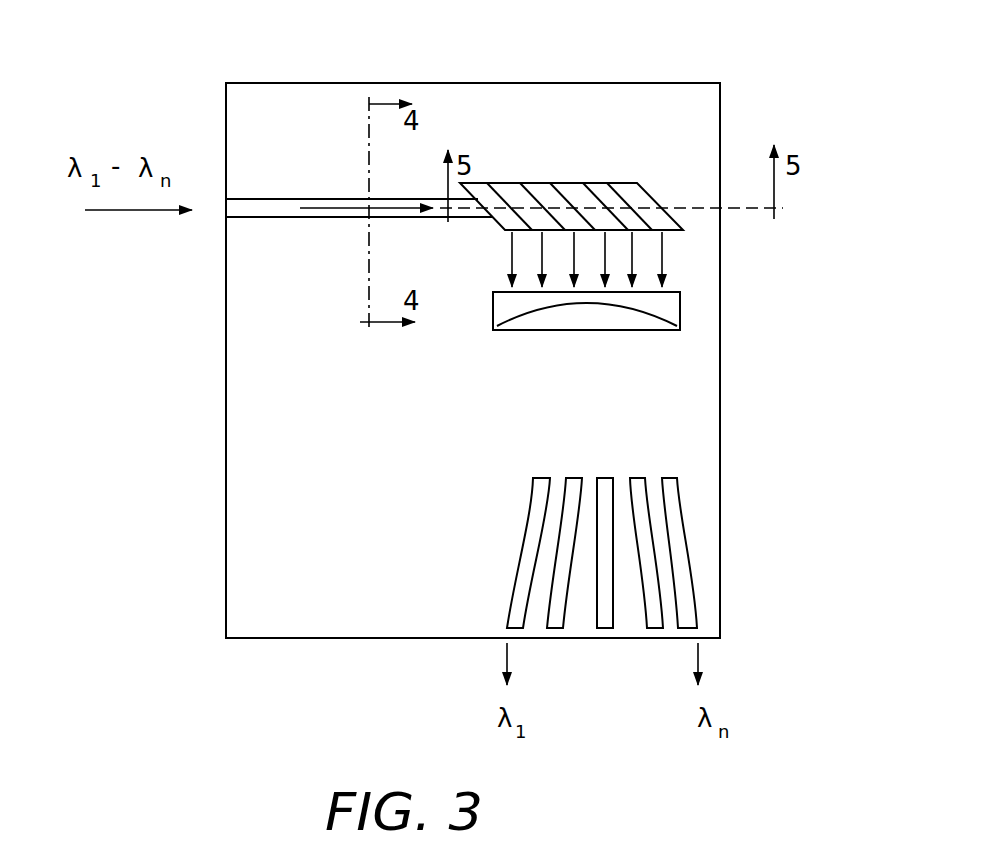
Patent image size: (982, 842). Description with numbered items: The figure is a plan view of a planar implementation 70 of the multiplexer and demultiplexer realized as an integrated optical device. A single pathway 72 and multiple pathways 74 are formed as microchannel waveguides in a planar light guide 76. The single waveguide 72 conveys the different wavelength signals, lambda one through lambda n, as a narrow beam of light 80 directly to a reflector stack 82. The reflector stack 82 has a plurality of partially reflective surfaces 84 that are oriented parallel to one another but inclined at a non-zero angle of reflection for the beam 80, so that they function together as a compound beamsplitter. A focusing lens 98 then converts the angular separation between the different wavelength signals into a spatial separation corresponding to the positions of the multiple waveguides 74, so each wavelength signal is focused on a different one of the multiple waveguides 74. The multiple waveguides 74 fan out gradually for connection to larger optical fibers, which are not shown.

The planar implementation 70 is at (222, 418).
The single pathway 72 is at (350, 219).
The multiple pathways 74 is at (699, 548).
The planar light guide 76 is at (702, 415).
The narrow beam of light 80 is at (392, 207).
The reflector stack 82 is at (654, 147).
The partially reflective surfaces 84 is at (590, 184).
The focusing lens 98 is at (680, 298).